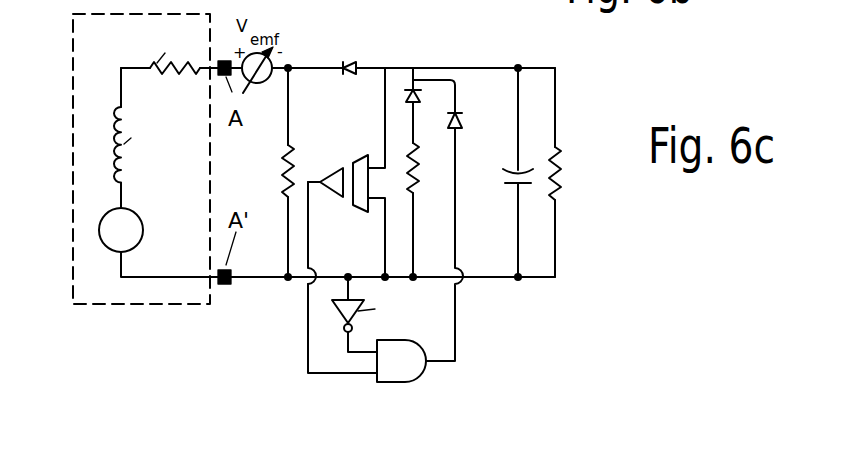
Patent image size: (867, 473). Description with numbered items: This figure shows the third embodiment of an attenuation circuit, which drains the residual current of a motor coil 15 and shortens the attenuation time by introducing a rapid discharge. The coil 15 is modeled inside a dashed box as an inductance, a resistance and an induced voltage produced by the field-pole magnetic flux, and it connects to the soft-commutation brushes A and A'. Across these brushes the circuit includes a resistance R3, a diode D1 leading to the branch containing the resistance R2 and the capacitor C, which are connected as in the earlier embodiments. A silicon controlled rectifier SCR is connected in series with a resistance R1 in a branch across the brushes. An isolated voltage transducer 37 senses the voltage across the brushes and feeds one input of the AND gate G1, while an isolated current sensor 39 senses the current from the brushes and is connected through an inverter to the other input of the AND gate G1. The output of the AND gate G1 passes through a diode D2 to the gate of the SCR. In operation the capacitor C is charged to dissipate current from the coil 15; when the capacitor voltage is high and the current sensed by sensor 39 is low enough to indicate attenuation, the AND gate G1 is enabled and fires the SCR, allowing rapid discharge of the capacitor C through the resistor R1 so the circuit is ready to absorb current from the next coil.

The coil 15 is at (72, 100).
The isolated voltage transducer 37 is at (331, 170).
The isolated current sensor 39 is at (348, 270).
The diode D1 is at (350, 75).
The diode D2 is at (461, 124).
The silicon controlled rectifier SCR is at (412, 94).
The resistance R1 is at (418, 183).
The resistance R2 is at (560, 153).
The resistance R3 is at (283, 184).
The capacitor C is at (515, 172).
The AND gate G1 is at (367, 282).